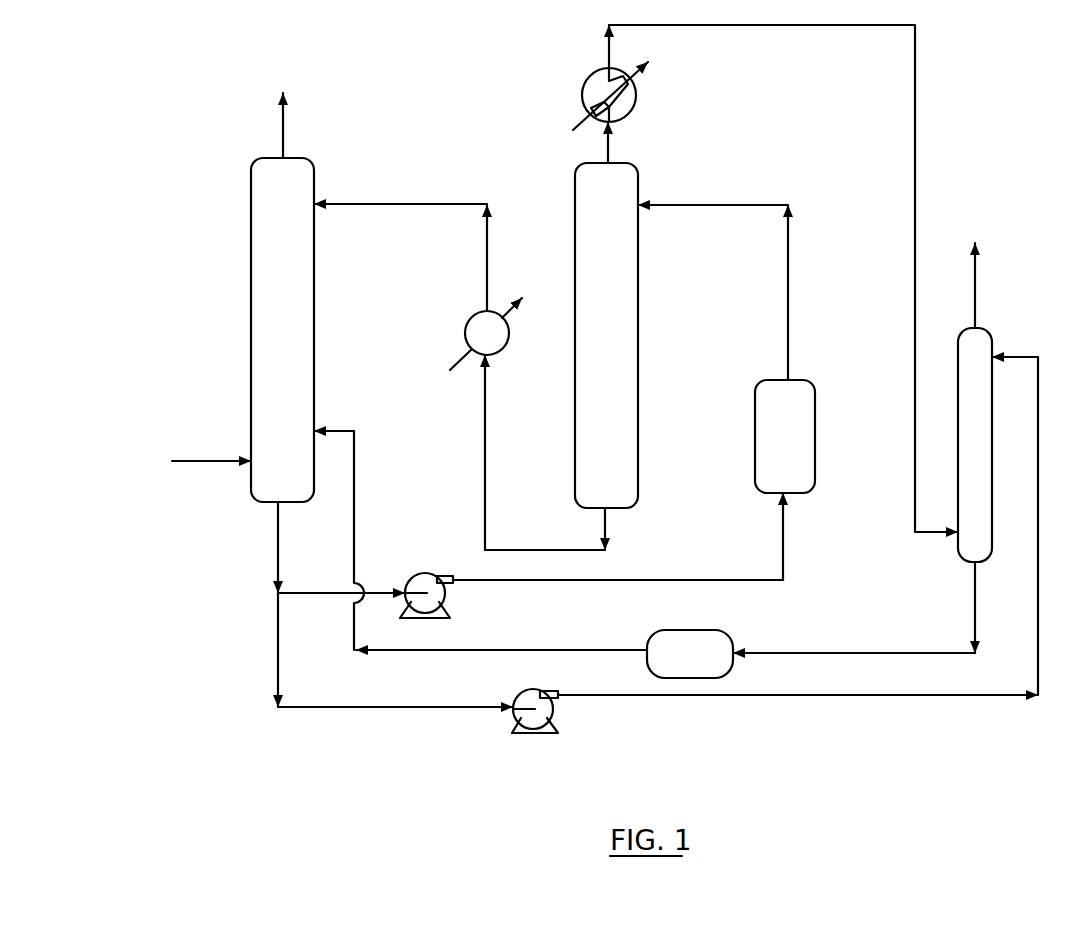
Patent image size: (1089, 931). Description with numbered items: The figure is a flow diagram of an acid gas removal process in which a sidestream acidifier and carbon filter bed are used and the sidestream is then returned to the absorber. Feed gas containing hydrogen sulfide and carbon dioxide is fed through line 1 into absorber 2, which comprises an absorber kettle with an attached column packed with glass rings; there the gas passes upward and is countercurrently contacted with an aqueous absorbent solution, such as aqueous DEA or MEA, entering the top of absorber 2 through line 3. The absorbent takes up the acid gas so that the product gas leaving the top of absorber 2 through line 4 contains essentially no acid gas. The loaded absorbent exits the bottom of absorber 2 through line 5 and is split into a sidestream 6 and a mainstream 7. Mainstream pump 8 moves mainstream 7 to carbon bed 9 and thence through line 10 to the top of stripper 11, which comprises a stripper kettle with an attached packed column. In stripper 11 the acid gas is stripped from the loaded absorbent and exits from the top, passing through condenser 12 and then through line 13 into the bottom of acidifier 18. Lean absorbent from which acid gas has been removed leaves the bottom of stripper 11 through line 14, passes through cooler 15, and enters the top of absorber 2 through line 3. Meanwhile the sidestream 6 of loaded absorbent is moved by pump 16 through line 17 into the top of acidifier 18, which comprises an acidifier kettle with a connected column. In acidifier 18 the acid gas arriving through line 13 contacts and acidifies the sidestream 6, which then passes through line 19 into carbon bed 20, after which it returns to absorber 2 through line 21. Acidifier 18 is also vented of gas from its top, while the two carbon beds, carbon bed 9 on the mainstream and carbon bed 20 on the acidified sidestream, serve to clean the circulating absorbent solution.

The line 1 is at (221, 458).
The absorber 2 is at (287, 349).
The line 3 is at (373, 204).
The line 4 is at (285, 138).
The line 5 is at (274, 554).
The sidestream 6 is at (397, 710).
The mainstream 7 is at (333, 592).
The mainstream pump 8 is at (411, 580).
The carbon bed 9 is at (790, 447).
The line 10 is at (788, 310).
The stripper 11 is at (616, 349).
The condenser 12 is at (593, 78).
The line 13 is at (774, 27).
The line 14 is at (486, 460).
The cooler 15 is at (470, 323).
The pump 16 is at (516, 695).
The line 17 is at (800, 700).
The acidifier 18 is at (991, 334).
The line 19 is at (843, 653).
The carbon bed 20 is at (703, 665).
The line 21 is at (523, 650).